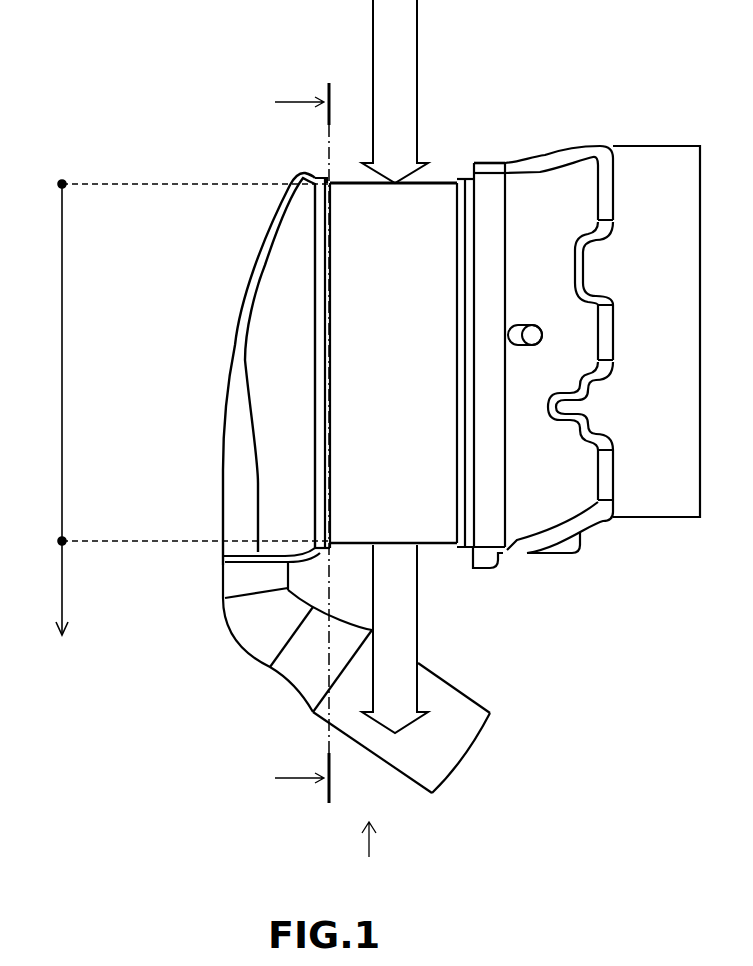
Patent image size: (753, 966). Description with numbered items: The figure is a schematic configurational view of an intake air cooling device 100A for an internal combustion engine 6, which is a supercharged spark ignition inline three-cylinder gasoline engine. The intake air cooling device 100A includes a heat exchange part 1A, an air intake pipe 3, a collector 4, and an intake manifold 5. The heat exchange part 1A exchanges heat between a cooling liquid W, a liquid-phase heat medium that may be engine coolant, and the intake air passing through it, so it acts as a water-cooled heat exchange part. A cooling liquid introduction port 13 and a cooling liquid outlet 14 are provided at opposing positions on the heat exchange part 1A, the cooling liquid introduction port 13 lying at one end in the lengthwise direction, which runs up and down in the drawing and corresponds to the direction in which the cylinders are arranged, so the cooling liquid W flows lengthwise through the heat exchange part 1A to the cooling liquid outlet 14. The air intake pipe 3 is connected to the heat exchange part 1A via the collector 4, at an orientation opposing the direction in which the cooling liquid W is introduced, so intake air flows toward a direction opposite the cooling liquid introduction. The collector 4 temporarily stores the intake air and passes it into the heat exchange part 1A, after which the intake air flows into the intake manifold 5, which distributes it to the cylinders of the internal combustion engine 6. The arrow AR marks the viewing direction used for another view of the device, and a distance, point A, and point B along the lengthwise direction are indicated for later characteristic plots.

The intake air cooling device 100A is at (165, 101).
The heat exchange part 1A is at (390, 287).
The air intake pipe 3 is at (428, 773).
The collector 4 is at (262, 387).
The intake manifold 5 is at (542, 193).
The internal combustion engine 6 is at (650, 158).
The cooling liquid introduction port 13 is at (397, 182).
The cooling liquid outlet 14 is at (397, 543).
The cooling liquid W is at (395, 48).
The arrow AR is at (369, 854).